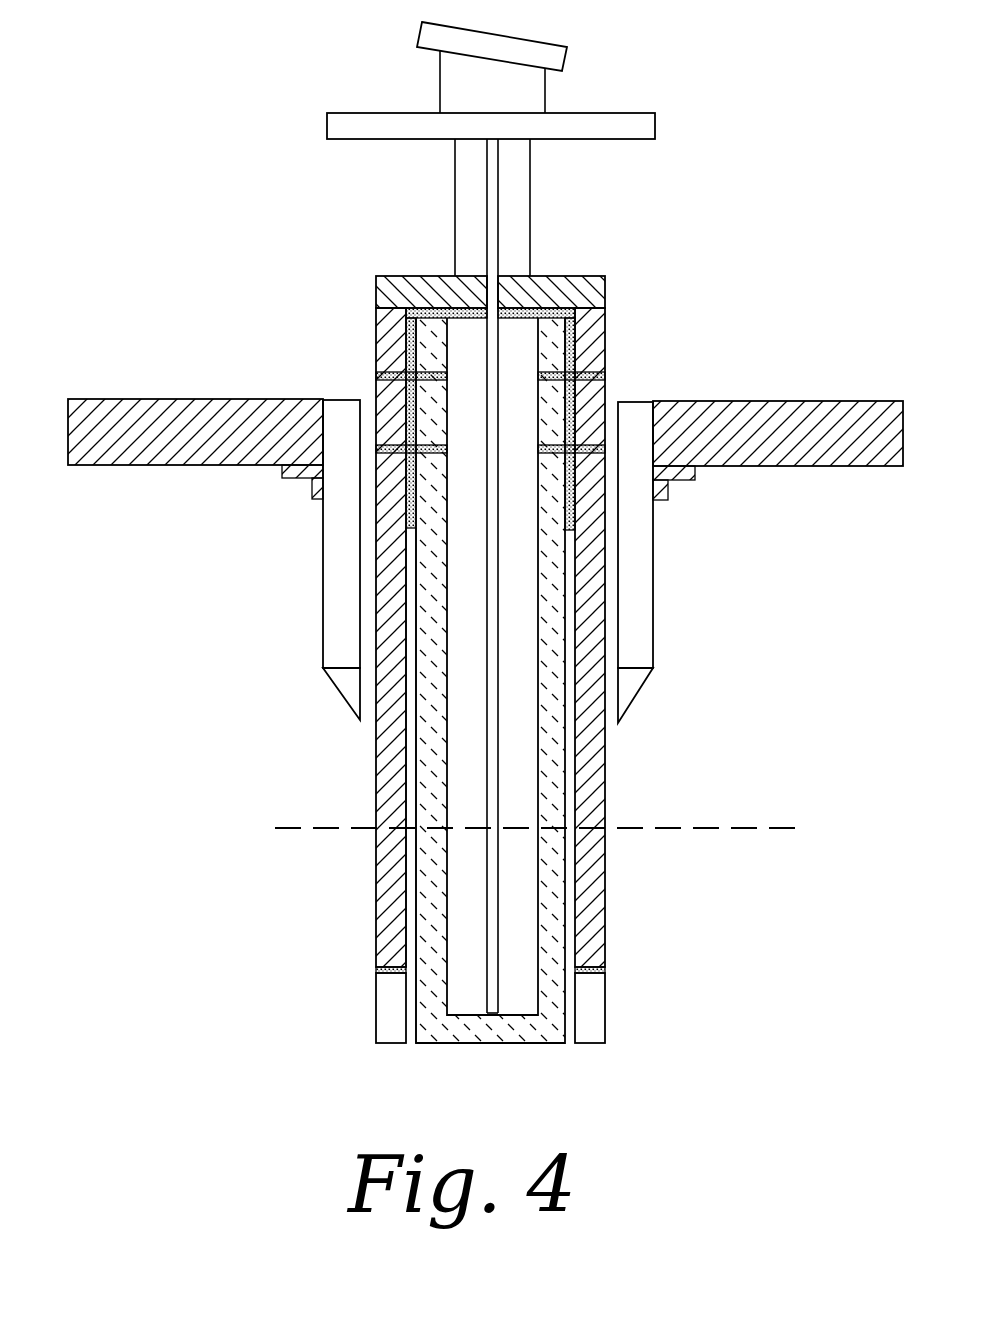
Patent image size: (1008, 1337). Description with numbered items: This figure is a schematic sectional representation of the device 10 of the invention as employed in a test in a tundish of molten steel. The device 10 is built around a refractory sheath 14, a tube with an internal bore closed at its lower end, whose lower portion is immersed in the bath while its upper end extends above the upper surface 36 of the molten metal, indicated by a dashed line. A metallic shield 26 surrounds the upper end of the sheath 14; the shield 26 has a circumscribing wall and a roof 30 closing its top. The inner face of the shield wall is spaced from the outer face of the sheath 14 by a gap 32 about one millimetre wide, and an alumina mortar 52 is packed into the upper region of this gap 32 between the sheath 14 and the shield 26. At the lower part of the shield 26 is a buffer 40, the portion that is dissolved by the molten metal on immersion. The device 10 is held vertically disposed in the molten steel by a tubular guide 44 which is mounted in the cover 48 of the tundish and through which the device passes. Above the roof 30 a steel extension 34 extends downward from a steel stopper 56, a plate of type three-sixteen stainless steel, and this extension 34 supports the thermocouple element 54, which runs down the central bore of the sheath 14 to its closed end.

The device 10 is at (752, 207).
The refractory sheath 14 is at (552, 918).
The metallic shield 26 is at (605, 792).
The roof 30 is at (413, 277).
The gap 32 is at (413, 733).
The steel extension 34 is at (515, 180).
The upper surface 36 is at (710, 828).
The buffer 40 is at (590, 1015).
The tubular guide 44 is at (338, 625).
The cover 48 is at (763, 423).
The alumina mortar 52 is at (572, 346).
The thermocouple element 54 is at (490, 862).
The steel stopper 56 is at (602, 125).